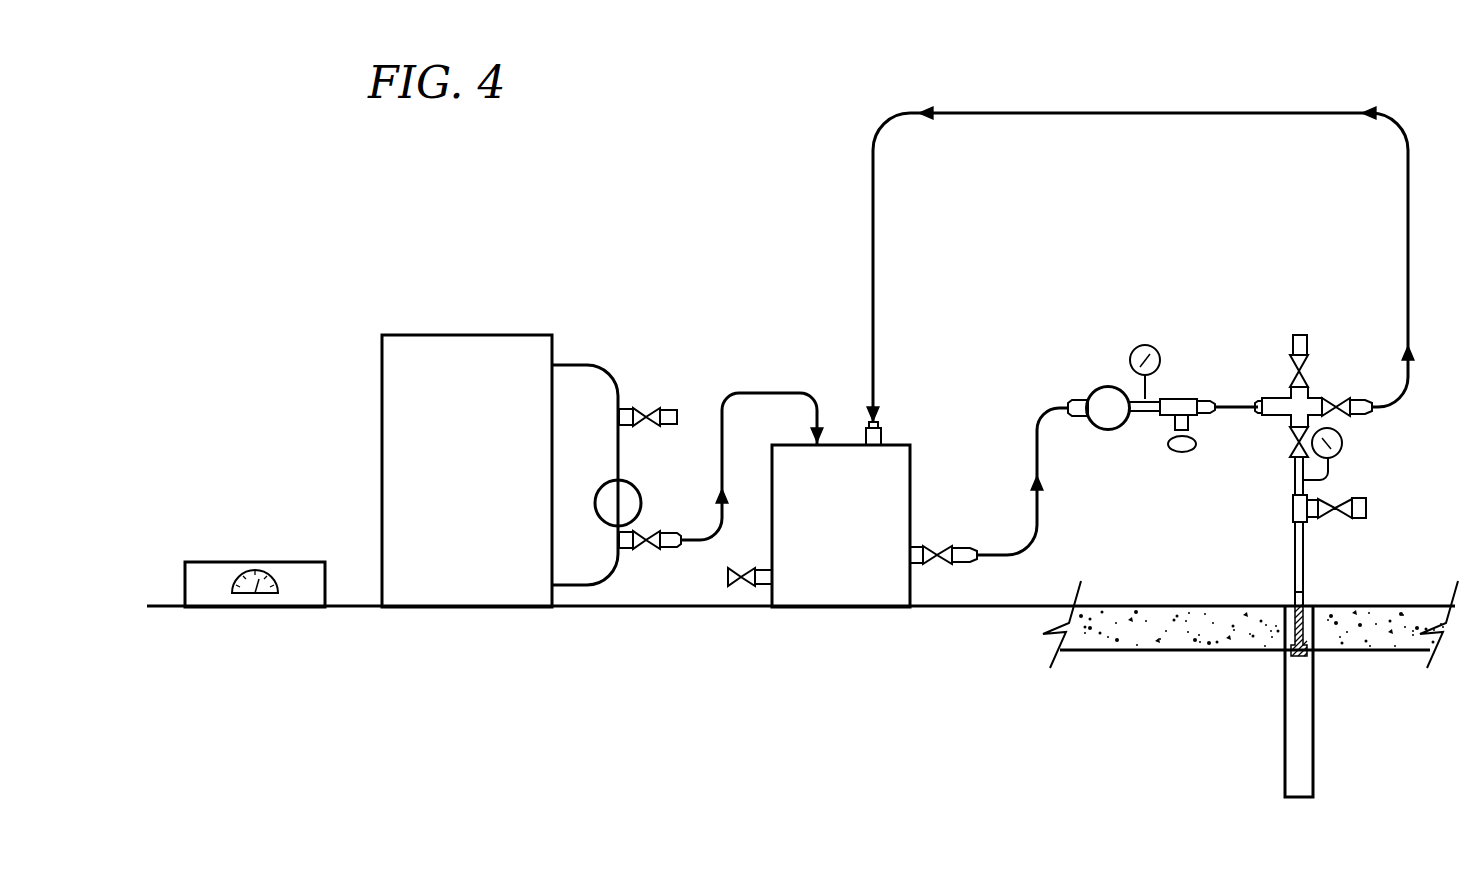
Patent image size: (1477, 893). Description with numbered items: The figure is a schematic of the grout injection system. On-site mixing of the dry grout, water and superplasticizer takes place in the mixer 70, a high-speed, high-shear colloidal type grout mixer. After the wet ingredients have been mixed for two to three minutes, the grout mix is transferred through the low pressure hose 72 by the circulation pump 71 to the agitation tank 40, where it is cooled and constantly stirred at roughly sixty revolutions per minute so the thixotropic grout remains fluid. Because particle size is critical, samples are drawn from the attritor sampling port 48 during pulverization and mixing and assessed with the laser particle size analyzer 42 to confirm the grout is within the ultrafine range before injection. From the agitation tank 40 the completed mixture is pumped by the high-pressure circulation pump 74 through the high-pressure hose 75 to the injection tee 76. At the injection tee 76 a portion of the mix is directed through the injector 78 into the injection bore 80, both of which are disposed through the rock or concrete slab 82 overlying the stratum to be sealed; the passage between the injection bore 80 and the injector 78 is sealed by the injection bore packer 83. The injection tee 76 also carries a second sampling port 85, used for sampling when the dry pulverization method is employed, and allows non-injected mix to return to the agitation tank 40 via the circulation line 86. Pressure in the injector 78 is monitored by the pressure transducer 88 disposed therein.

The agitation tank 40 is at (825, 527).
The laser particle size analyzer 42 is at (240, 561).
The attritor sampling port 48 is at (667, 409).
The mixer 70 is at (452, 441).
The circulation pump 71 is at (604, 485).
The low pressure hose 72 is at (590, 365).
The high-pressure circulation pump 74 is at (1108, 386).
The high-pressure hose 75 is at (1050, 410).
The injection tee 76 is at (1278, 415).
The injector 78 is at (1305, 552).
The injection bore 80 is at (1317, 708).
The rock or concrete slab 82 is at (1155, 622).
The injection bore packer 83 is at (1285, 653).
The second sampling port 85 is at (1303, 333).
The circulation line 86 is at (1112, 112).
The pressure transducer 88 is at (1362, 497).